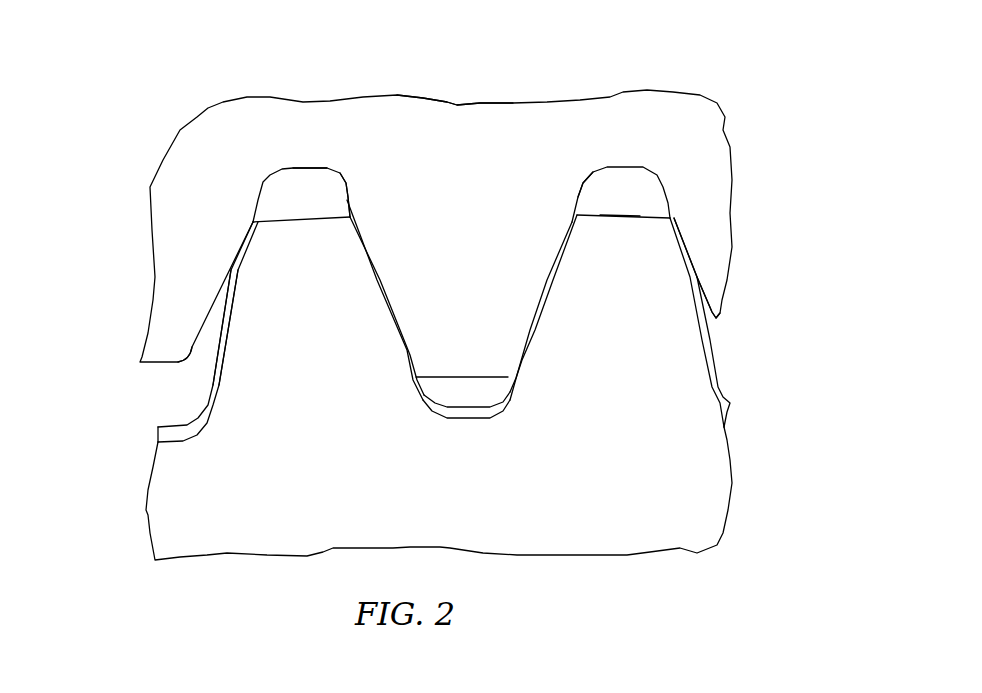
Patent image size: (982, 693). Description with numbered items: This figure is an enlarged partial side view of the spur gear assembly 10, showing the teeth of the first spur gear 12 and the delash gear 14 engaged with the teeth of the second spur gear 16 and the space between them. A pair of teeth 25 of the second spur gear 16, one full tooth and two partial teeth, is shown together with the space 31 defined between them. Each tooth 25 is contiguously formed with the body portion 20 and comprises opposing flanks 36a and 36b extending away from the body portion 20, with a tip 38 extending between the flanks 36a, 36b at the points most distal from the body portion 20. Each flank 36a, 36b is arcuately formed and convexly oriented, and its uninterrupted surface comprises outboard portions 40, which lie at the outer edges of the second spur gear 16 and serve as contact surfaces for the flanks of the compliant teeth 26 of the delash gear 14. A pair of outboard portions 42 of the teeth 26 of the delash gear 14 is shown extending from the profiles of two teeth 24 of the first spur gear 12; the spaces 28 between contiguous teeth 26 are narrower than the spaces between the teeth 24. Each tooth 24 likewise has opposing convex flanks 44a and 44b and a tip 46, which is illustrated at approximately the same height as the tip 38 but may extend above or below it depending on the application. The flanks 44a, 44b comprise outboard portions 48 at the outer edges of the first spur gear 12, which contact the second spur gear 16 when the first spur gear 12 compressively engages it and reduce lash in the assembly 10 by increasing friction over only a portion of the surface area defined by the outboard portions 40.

The spur gear assembly 10 is at (789, 520).
The first spur gear 12 is at (153, 517).
The delash gear 14 is at (158, 432).
The second spur gear 16 is at (223, 113).
The body portion 20 is at (448, 113).
The teeth of first spur gear 24 is at (318, 259).
The teeth of second spur gear 25 is at (473, 359).
The teeth of delash gear 26 is at (346, 210).
The spaces 28 is at (475, 403).
The space 31 is at (320, 186).
The flank 36a is at (390, 307).
The flank 36b is at (535, 295).
The tip 38 is at (453, 372).
The outboard portions 40 is at (192, 352).
The outboard portions of delash gear teeth 42 is at (577, 213).
The flank 44a is at (218, 366).
The flank 44b is at (403, 343).
The tip 46 is at (620, 213).
The outboard portions 48 is at (535, 328).